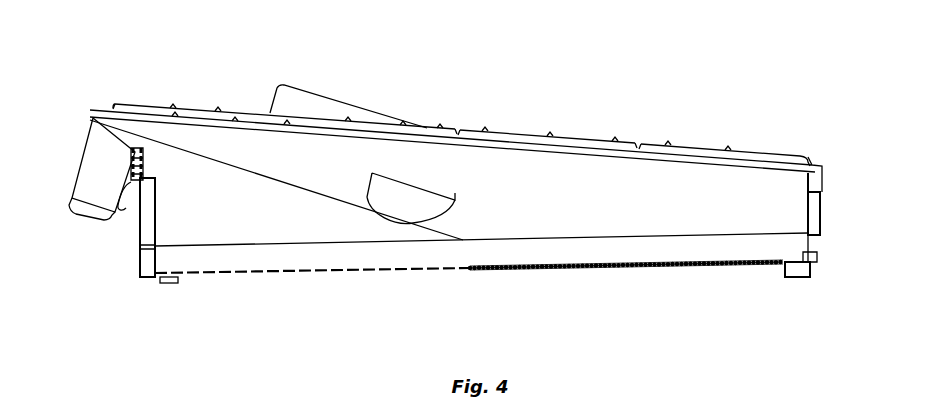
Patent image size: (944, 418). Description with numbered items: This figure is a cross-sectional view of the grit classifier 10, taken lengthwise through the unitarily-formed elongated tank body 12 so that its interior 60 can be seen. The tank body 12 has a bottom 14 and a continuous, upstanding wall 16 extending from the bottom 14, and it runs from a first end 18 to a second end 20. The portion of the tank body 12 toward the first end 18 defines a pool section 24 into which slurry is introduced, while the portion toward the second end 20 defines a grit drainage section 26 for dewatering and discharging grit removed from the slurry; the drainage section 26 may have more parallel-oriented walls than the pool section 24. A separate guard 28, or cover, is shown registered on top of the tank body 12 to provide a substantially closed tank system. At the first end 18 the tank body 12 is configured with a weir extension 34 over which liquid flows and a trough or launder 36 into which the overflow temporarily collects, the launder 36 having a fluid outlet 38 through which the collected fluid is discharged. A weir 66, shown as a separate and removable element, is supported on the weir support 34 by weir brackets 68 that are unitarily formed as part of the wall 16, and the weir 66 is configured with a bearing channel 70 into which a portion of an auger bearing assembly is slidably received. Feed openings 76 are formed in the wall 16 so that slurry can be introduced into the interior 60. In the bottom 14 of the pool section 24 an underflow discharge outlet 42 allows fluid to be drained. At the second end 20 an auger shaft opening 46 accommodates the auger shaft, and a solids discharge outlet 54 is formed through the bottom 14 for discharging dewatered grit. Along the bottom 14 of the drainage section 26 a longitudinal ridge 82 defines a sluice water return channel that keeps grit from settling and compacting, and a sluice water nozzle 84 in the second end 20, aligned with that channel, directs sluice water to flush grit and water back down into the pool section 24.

The grit classifier 10 is at (517, 108).
The elongated tank body 12 is at (517, 227).
The bottom 14 is at (364, 258).
The continuous upstanding wall 16 is at (690, 180).
The first end 18 is at (142, 268).
The second end 20 is at (812, 188).
The pool section 24 is at (268, 226).
The grit drainage section 26 is at (587, 172).
The guard 28 is at (318, 106).
The weir extension 34 is at (124, 220).
The launder 36 is at (92, 178).
The fluid outlet 38 is at (80, 205).
The underflow discharge outlet 42 is at (170, 283).
The auger shaft opening 46 is at (822, 197).
The solids discharge outlet 54 is at (797, 270).
The interior 60 is at (535, 205).
The weir 66 is at (130, 167).
The weir brackets 68 is at (136, 148).
The bearing channel 70 is at (140, 232).
The feed openings 76 is at (426, 210).
The ridge 82 is at (644, 268).
The sluice water nozzle 84 is at (815, 255).